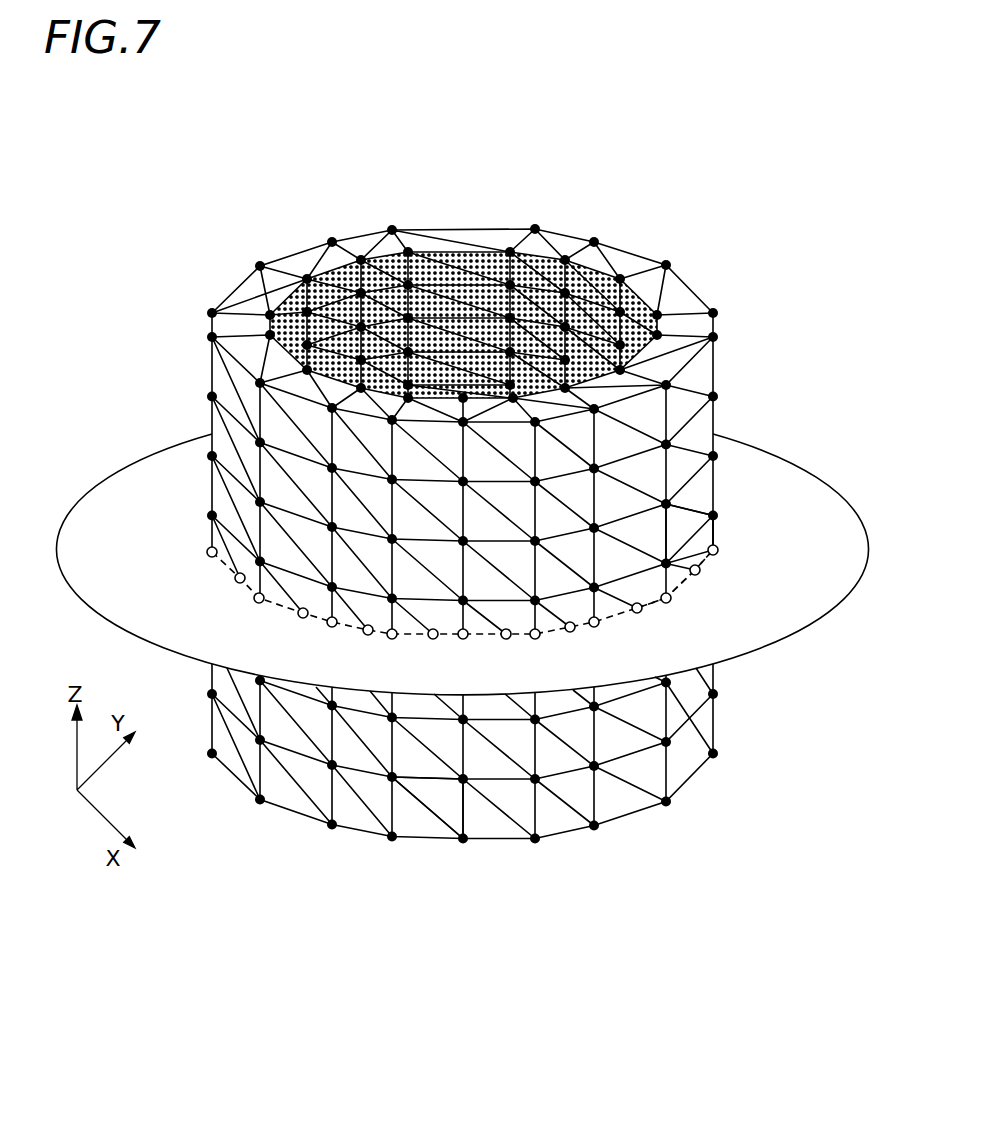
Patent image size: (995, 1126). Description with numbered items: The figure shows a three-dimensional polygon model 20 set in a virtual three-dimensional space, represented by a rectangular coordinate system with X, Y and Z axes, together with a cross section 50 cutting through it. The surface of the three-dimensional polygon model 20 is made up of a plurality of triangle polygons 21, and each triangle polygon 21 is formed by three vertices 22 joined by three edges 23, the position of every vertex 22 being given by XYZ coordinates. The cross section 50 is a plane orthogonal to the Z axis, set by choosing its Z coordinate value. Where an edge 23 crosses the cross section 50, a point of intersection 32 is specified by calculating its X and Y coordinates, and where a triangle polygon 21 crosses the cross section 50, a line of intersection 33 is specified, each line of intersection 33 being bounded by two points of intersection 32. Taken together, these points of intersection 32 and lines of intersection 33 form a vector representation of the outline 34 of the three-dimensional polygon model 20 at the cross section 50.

The three-dimensional polygon model 20 is at (514, 530).
The triangle polygon 21 is at (698, 540).
The vertex 22 is at (713, 515).
The edge 23 is at (713, 535).
The point of intersection 32 is at (719, 550).
The line of intersection 33 is at (705, 562).
The outline 34 is at (247, 592).
The cross section 50 is at (810, 498).